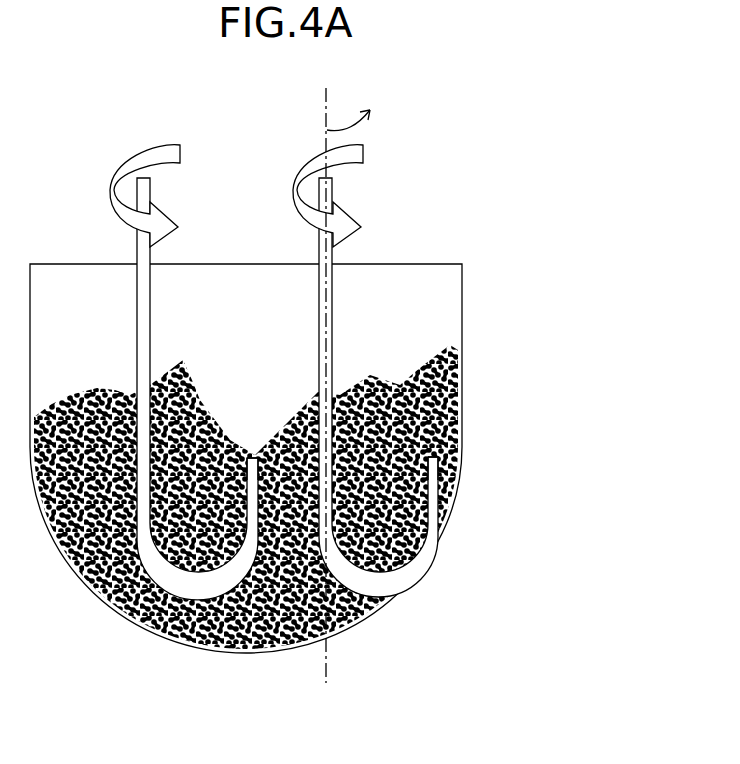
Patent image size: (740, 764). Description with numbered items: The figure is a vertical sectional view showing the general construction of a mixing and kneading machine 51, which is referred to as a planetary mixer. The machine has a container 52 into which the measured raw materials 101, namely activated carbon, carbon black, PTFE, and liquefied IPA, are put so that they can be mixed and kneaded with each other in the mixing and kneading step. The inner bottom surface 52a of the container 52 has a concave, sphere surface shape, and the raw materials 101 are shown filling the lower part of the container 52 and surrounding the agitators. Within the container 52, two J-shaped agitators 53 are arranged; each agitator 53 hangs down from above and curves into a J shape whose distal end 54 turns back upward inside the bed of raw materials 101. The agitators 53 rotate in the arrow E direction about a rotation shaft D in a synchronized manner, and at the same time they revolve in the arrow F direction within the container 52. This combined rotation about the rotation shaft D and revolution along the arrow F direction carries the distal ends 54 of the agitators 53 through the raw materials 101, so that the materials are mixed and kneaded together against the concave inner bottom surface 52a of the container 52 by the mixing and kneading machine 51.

The mixing and kneading machine 51 is at (307, 448).
The container 52 is at (292, 464).
The inner bottom surface 52a is at (352, 622).
The J-shaped agitator 53 is at (301, 426).
The distal end 54 is at (248, 455).
The raw materials 101 is at (463, 392).
The rotation shaft D is at (327, 375).
The arrow E direction E is at (303, 164).
The arrow F direction F is at (348, 112).